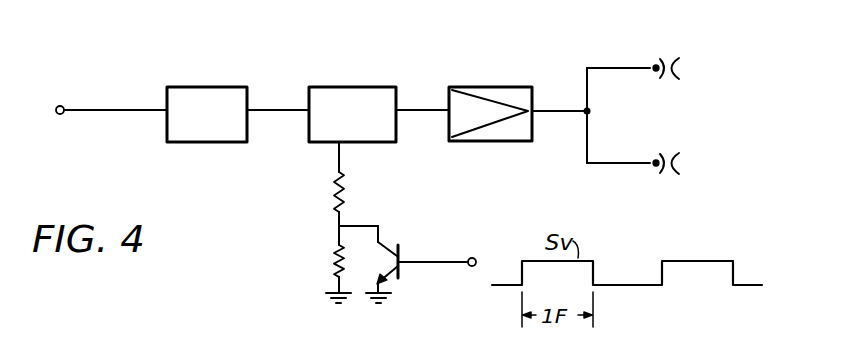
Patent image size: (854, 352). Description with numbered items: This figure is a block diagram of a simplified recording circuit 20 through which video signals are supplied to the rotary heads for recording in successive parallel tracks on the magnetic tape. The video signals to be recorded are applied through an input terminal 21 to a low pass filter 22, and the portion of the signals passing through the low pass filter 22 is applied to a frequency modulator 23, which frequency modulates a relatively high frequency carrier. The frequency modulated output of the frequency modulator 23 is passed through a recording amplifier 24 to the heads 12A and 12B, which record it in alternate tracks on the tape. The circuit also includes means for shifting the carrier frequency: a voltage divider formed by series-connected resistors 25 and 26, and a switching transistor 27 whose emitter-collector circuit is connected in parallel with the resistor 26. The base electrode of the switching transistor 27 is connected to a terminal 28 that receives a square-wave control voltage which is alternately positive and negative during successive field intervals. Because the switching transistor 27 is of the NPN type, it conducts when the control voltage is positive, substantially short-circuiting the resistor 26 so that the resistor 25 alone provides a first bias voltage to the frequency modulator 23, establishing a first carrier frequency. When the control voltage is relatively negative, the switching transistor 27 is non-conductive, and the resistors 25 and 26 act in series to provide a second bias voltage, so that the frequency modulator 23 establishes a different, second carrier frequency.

The recording circuit 20 is at (403, 73).
The input terminal 21 is at (58, 106).
The low pass filter 22 is at (196, 144).
The frequency modulator 23 is at (349, 82).
The recording amplifier 24 is at (519, 82).
The resistor 25 is at (333, 188).
The resistor 26 is at (333, 256).
The switching transistor 27 is at (401, 252).
The terminal 28 is at (476, 259).
The head 12A is at (676, 53).
The head 12B is at (672, 181).